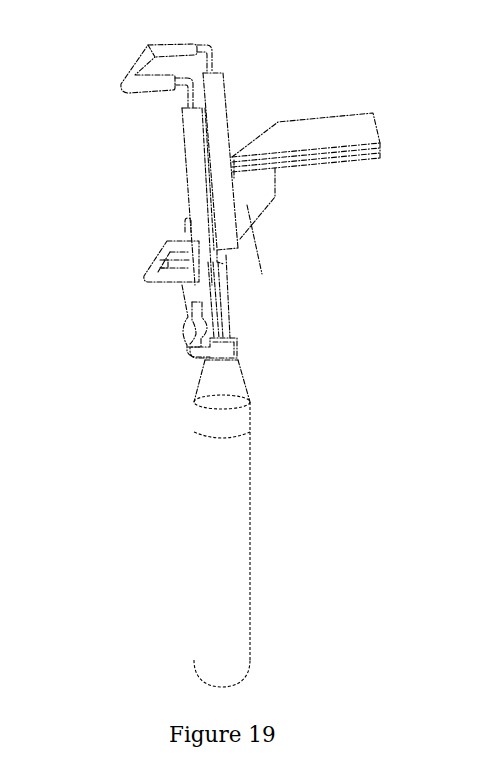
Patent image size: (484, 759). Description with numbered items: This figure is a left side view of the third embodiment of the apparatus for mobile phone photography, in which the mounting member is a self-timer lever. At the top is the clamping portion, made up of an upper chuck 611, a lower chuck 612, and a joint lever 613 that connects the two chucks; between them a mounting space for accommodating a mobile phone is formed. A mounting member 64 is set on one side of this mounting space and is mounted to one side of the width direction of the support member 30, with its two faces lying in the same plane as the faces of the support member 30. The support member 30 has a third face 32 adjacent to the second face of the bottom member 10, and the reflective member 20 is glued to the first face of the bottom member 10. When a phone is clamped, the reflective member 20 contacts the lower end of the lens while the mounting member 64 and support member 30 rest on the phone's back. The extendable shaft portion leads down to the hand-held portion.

The upper chuck 611 is at (140, 85).
The joint lever 613 is at (197, 165).
The mounting member 64 is at (185, 229).
The lower chuck 612 is at (162, 272).
The reflective member 20 is at (273, 132).
The bottom member 10 is at (302, 163).
The support member 30 is at (247, 211).
The third face 32 is at (261, 249).